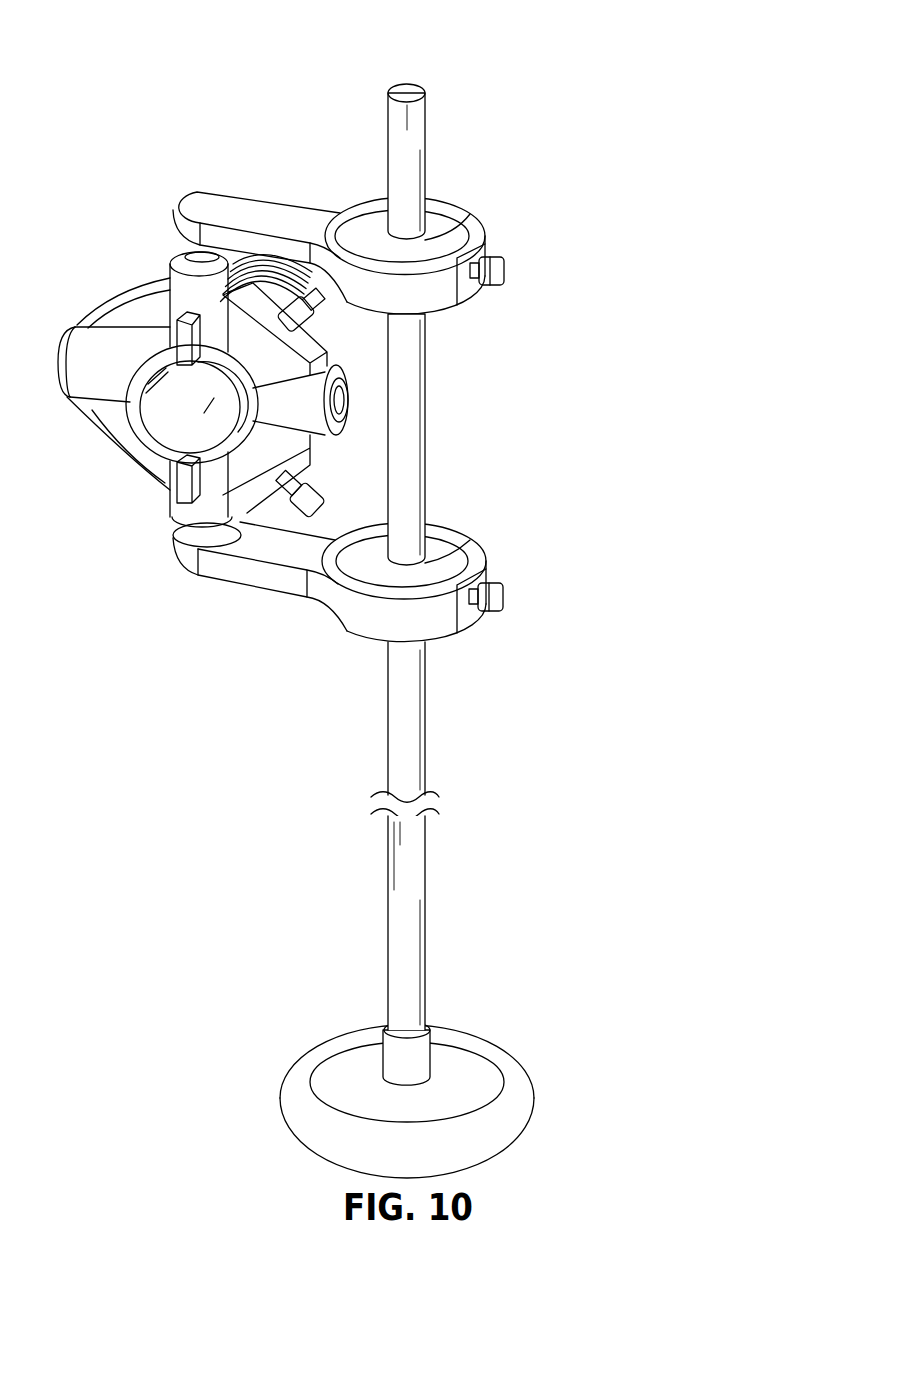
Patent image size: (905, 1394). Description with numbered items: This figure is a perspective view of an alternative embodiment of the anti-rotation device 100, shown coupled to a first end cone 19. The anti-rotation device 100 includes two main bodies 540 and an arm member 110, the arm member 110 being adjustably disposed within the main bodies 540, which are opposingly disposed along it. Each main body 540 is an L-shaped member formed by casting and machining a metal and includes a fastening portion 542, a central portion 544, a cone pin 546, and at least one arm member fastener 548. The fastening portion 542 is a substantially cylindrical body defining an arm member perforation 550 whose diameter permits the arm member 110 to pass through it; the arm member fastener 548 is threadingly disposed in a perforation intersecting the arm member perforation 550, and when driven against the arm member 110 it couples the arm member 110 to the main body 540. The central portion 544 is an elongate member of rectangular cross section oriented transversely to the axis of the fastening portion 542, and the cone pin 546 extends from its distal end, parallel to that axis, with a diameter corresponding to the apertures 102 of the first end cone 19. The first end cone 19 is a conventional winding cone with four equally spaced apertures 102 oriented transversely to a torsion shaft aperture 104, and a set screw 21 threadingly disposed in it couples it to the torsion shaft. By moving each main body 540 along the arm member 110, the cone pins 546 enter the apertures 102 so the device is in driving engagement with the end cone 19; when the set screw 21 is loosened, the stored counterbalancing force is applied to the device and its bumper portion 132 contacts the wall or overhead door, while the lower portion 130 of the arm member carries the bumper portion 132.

The anti-rotation device 100 is at (310, 48).
The arm member 110 is at (446, 739).
The lower post 130 is at (427, 882).
The bumper portion 132 is at (537, 1097).
The first end cone 19 is at (153, 458).
The torsion shaft aperture 104 is at (168, 425).
The apertures 102 is at (178, 254).
The set screw 21 is at (318, 322).
The main body 540 is at (323, 200).
The fastening portion 542 is at (458, 215).
The central portion 544 is at (262, 203).
The cone pin 546 is at (203, 254).
The arm member fastener 548 is at (505, 270).
The arm member perforation 550 is at (442, 236).